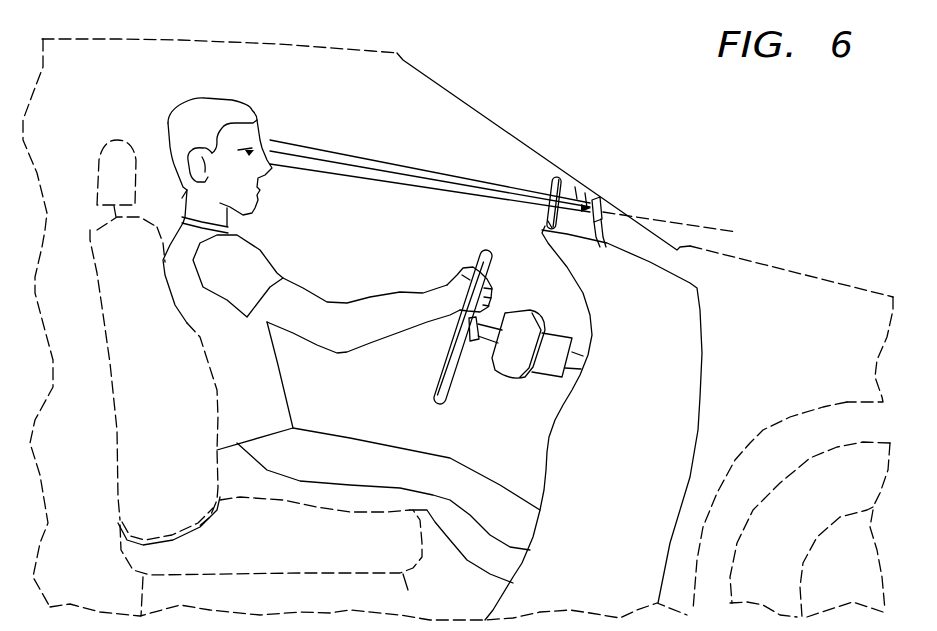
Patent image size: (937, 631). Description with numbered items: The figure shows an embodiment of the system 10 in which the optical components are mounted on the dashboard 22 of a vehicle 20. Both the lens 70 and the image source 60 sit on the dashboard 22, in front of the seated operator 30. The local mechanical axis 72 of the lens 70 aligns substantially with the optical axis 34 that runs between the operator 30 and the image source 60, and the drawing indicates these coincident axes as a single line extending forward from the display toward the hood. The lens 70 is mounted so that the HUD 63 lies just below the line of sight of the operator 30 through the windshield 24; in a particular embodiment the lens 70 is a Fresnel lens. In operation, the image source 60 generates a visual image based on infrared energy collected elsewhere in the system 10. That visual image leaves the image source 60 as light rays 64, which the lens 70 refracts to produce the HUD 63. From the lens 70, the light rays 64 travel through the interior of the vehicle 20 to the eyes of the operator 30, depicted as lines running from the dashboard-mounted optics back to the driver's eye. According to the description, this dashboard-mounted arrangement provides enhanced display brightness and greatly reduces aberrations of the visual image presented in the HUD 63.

The system 10 is at (737, 136).
The vehicle 20 is at (820, 280).
The dashboard 22 is at (548, 450).
The windshield 24 is at (489, 120).
The operator 30 is at (163, 133).
The optical axis 34 is at (675, 204).
The local mechanical axis 72 is at (722, 204).
The image source 60 is at (608, 207).
The HUD 63 is at (547, 215).
The light rays 64 is at (578, 200).
The lens 70 is at (550, 185).